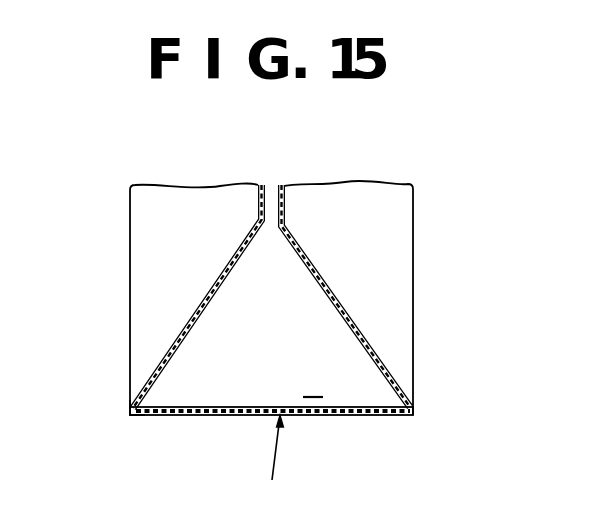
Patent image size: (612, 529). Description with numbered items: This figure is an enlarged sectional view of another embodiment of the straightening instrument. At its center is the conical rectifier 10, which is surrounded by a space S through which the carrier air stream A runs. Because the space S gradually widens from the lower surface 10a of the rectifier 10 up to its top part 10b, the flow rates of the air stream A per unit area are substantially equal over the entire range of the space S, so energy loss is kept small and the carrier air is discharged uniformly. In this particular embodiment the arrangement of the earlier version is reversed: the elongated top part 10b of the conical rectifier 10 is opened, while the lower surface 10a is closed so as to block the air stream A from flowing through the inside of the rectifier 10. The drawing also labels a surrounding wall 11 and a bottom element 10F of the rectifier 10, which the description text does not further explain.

The container 11 is at (130, 252).
The rectifier 10 is at (170, 350).
The lower surface 10a is at (163, 414).
The top part 10b is at (285, 228).
The bottom plate of guide member 10F is at (227, 415).
The space S is at (390, 330).
The air stream A is at (277, 450).